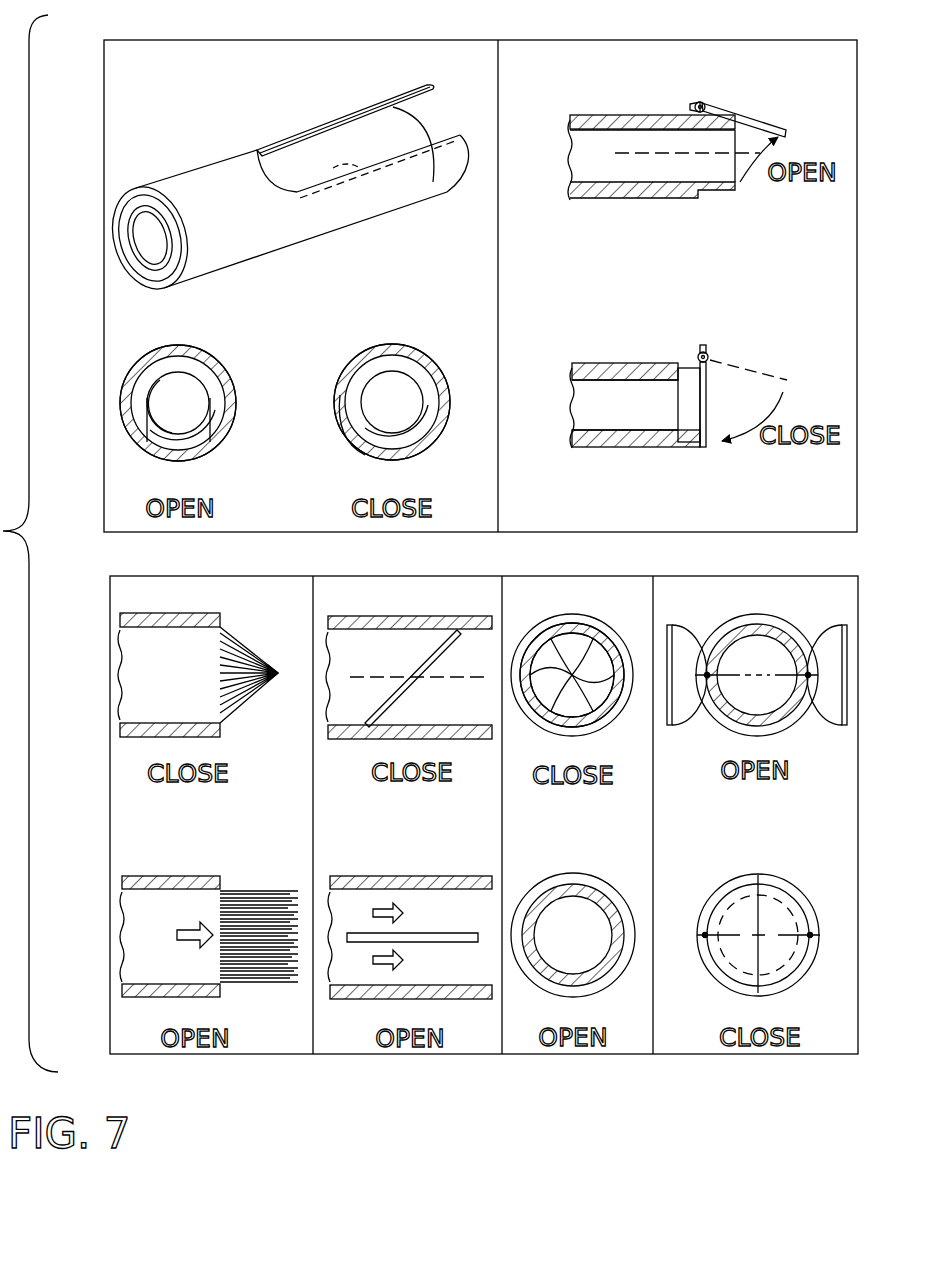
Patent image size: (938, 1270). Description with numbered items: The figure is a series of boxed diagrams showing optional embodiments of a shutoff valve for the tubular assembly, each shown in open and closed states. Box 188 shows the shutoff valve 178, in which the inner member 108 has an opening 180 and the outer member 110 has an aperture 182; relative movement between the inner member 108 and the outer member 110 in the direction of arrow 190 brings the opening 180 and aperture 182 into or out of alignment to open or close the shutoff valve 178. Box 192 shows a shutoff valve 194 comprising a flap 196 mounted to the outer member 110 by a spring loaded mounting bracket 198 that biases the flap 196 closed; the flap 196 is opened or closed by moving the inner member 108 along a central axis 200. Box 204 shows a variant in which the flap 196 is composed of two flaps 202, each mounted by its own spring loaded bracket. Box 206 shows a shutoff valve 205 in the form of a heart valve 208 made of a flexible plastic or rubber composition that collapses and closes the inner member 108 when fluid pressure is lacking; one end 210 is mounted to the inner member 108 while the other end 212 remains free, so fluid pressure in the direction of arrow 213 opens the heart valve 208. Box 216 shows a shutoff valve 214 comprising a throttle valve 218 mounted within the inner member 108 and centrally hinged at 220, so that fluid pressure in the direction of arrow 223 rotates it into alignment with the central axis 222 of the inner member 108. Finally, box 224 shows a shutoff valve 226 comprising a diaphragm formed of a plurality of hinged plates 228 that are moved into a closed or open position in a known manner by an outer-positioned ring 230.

The inner member 108 is at (148, 248).
The outer member 110 is at (160, 158).
The shutoff valve 178 is at (388, 86).
The opening 180 is at (302, 150).
The aperture 182 is at (371, 136).
The box 188 is at (104, 434).
The arrow 190 is at (480, 150).
The box 192 is at (600, 40).
The shutoff valve 194 is at (681, 102).
The flap 196 is at (758, 116).
The spring loaded mounting bracket 198 is at (706, 104).
The central axis 200 is at (700, 152).
The two flaps 202 is at (665, 637).
The box 204 is at (767, 576).
The shutoff valve 205 is at (246, 640).
The box 206 is at (110, 780).
The heart valve 208 is at (240, 712).
The one end 210 is at (225, 876).
The other end 212 is at (284, 676).
The arrow 213 is at (188, 944).
The shutoff valve 214 is at (406, 660).
The box 216 is at (375, 576).
The throttle valve 218 is at (436, 640).
The hinge 220 is at (415, 680).
The central axis 222 is at (337, 672).
The arrow 223 is at (385, 970).
The box 224 is at (600, 576).
The shutoff valve 226 is at (595, 730).
The hinged plates 228 is at (588, 627).
The outer-positioned ring 230 is at (630, 712).